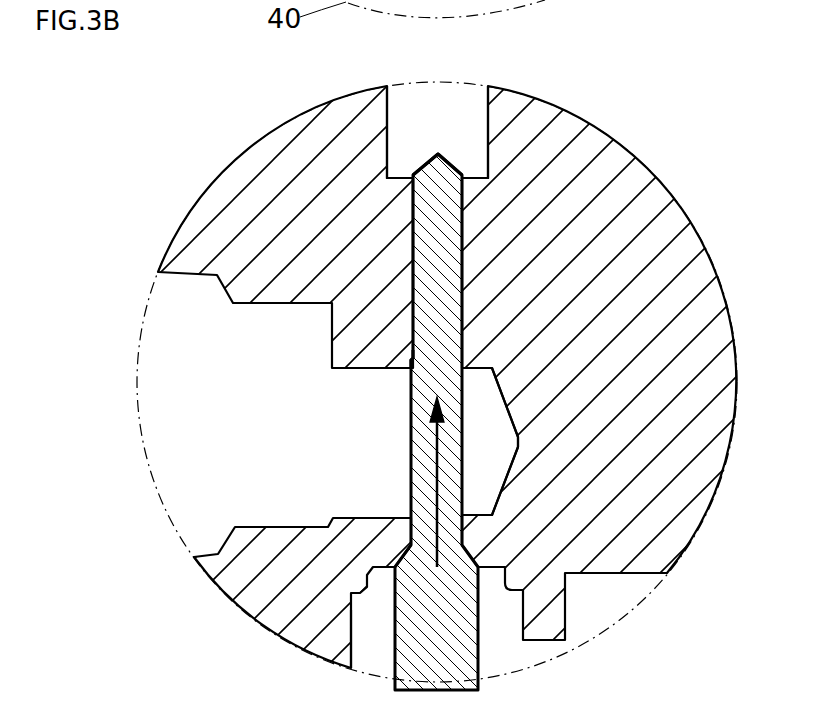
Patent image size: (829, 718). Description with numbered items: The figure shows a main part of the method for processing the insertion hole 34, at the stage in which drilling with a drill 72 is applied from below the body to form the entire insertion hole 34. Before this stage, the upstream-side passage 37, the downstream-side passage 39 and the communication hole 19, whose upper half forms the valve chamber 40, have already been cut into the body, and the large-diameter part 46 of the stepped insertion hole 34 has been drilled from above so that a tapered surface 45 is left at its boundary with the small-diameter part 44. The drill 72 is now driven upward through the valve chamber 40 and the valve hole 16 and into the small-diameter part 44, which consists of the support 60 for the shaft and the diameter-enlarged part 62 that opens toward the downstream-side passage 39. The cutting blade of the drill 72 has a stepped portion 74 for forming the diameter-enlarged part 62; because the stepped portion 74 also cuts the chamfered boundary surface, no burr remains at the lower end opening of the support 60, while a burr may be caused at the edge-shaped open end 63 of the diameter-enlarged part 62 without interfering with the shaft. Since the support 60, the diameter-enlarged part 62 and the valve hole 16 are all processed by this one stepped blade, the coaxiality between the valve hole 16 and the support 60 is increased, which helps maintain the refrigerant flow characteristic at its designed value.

The valve hole 16 is at (405, 517).
The communication hole 19 is at (351, 618).
The insertion hole 34 is at (146, 143).
The upstream-side passage 37 is at (610, 573).
The downstream-side passage 39 is at (245, 304).
The valve chamber 40 is at (363, 653).
The small-diameter part 44 is at (412, 200).
The tapered surface 45 is at (460, 174).
The large-diameter part 46 is at (388, 157).
The support 60 is at (412, 272).
The diameter-enlarged part 62 is at (411, 357).
The open end 63 is at (410, 370).
The drill 72 is at (464, 398).
The stepped portion 74 is at (464, 362).